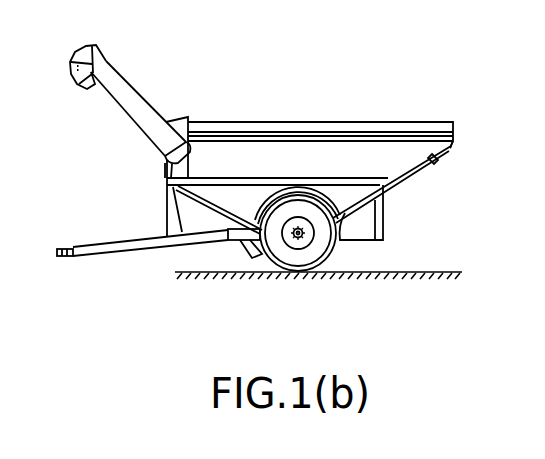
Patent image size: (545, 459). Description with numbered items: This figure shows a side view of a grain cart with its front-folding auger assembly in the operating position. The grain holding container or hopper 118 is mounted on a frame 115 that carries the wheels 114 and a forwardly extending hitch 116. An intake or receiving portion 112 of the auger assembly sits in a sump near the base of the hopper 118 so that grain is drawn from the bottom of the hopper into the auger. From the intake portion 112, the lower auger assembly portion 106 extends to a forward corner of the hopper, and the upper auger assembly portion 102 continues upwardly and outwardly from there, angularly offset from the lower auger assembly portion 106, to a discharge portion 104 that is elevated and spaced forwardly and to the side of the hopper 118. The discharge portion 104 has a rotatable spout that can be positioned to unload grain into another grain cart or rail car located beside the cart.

The upper auger assembly portion 102 is at (128, 108).
The discharge portion 104 is at (105, 62).
The lower auger assembly portion 106 is at (198, 196).
The intake portion 112 is at (238, 260).
The wheels 114 is at (316, 265).
The frame 115 is at (360, 244).
The hitch 116 is at (94, 254).
The hopper 118 is at (457, 158).